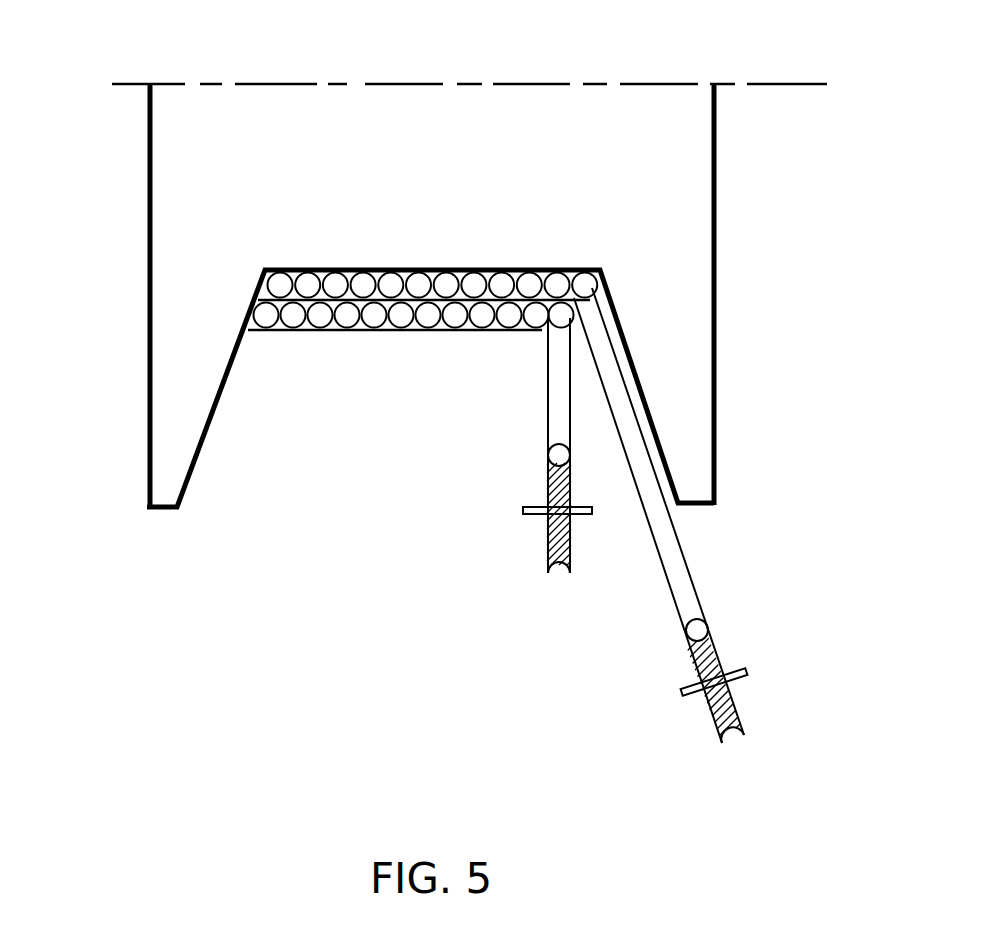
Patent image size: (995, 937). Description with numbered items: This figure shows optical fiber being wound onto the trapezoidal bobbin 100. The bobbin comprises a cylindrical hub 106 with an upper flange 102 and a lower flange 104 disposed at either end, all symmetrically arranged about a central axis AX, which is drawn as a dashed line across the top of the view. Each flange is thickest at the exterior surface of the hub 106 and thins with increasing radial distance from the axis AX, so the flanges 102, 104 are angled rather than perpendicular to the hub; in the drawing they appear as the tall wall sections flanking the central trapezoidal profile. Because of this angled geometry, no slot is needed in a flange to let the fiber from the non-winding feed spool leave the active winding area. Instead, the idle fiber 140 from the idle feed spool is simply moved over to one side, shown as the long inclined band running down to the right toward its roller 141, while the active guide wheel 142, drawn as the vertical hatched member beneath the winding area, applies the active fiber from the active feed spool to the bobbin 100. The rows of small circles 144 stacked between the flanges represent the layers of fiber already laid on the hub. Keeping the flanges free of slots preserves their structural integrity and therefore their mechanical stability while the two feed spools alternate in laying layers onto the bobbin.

The trapezoidal bobbin 100 is at (100, 615).
The upper flange 102 is at (673, 298).
The lower flange 104 is at (182, 372).
The cylindrical hub 106 is at (362, 147).
The idle fiber 140 is at (678, 572).
The lower roller 141 is at (720, 650).
The active guide wheel 142 is at (547, 533).
The rollers 144 is at (263, 297).
The central axis AX is at (767, 84).